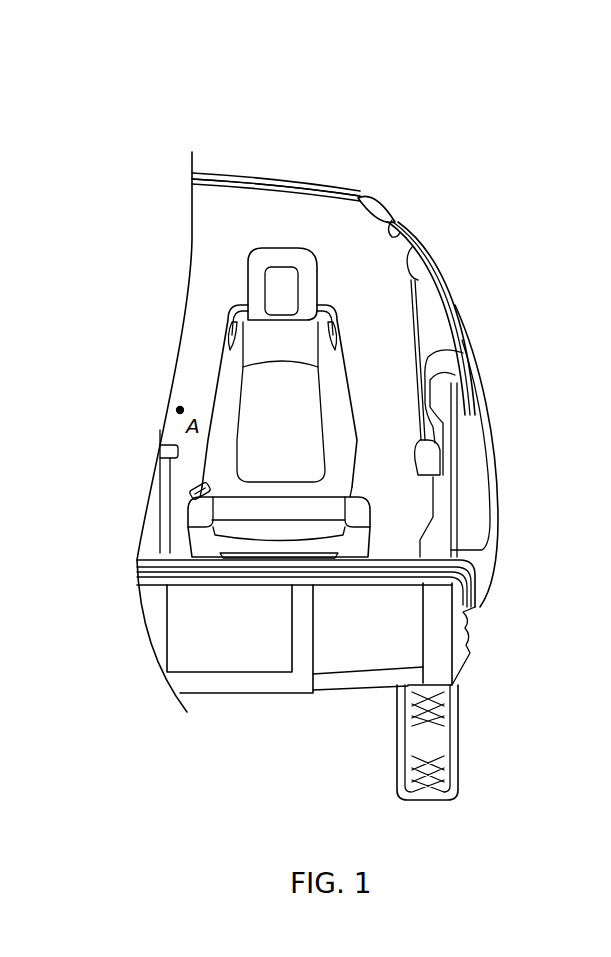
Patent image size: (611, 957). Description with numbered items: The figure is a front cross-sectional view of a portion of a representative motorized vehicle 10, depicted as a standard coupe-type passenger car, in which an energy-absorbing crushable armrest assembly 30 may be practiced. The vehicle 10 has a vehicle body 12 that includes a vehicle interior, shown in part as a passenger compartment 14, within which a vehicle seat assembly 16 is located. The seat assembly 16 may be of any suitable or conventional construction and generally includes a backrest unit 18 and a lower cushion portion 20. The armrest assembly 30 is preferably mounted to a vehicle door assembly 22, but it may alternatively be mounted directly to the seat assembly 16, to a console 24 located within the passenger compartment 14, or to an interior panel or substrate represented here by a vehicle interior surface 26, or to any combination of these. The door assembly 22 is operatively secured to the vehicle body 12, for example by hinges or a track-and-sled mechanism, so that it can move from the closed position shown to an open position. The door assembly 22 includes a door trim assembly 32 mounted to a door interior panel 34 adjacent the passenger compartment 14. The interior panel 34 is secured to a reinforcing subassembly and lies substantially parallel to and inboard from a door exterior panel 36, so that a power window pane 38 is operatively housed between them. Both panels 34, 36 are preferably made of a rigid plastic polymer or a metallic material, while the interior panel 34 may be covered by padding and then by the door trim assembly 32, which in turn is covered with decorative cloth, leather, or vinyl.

The motorized vehicle 10 is at (386, 130).
The vehicle body 12 is at (240, 173).
The passenger compartment 14 is at (308, 197).
The vehicle seat assembly 16 is at (331, 290).
The backrest unit 18 is at (238, 303).
The lower cushion portion 20 is at (330, 497).
The vehicle door assembly 22 is at (500, 386).
The console 24 is at (161, 430).
The vehicle interior surface 26 is at (398, 220).
The crushable armrest assembly 30 is at (404, 439).
The door trim assembly 32 is at (457, 348).
The door interior panel 34 is at (445, 397).
The door exterior panel 36 is at (493, 460).
The power window pane 38 is at (440, 280).